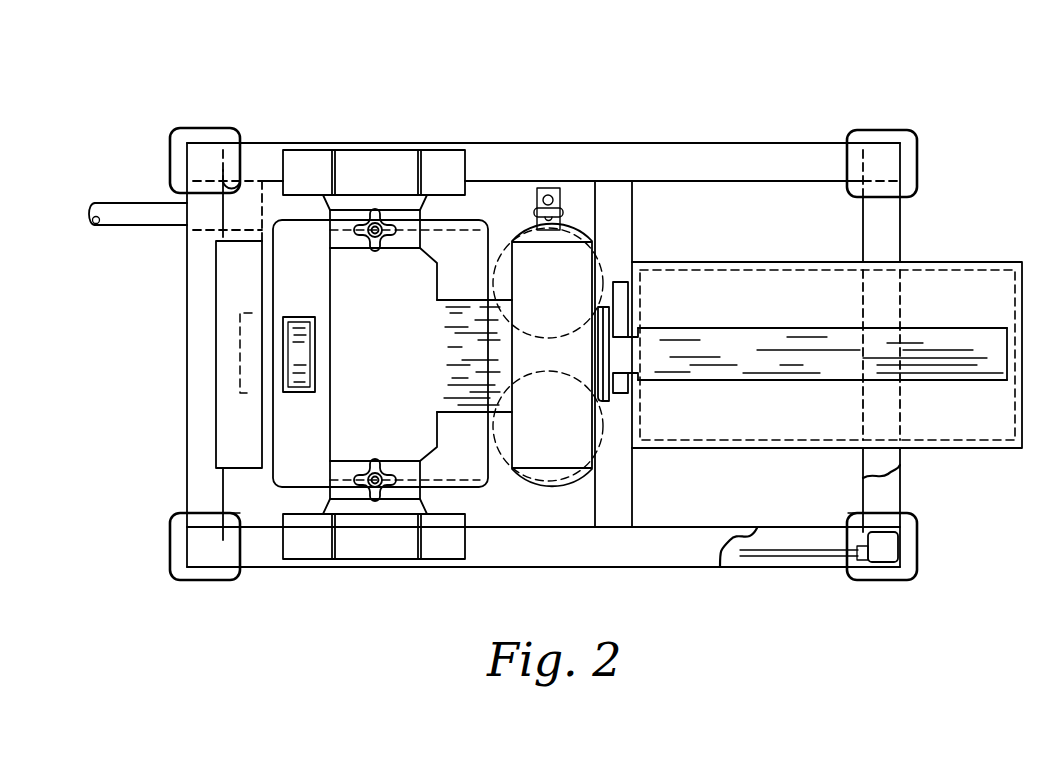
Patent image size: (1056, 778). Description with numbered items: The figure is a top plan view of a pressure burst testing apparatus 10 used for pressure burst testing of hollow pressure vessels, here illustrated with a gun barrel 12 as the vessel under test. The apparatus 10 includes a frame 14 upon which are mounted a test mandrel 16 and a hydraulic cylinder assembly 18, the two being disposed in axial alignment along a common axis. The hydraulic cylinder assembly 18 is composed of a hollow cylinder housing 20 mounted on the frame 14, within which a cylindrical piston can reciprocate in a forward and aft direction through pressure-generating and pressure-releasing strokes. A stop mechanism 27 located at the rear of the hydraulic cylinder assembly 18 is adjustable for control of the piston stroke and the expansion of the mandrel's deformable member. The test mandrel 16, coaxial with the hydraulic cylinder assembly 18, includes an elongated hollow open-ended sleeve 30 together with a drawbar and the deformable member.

The pressure burst testing apparatus 10 is at (972, 118).
The gun barrel 12 is at (923, 328).
The frame 14 is at (753, 140).
The test mandrel 16 is at (722, 386).
The hydraulic cylinder assembly 18 is at (467, 247).
The hollow cylinder housing 20 is at (457, 418).
The stop mechanism 27 is at (315, 305).
The elongated hollow open-ended sleeve 30 is at (621, 385).